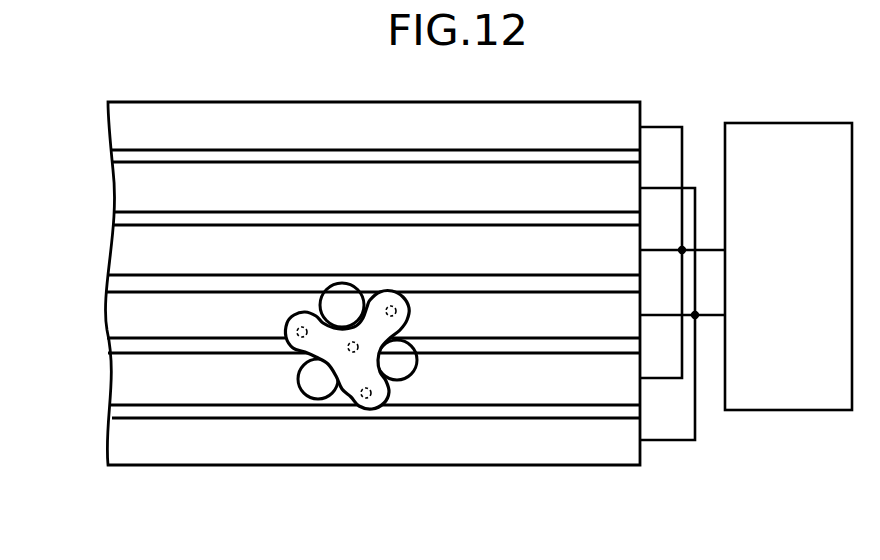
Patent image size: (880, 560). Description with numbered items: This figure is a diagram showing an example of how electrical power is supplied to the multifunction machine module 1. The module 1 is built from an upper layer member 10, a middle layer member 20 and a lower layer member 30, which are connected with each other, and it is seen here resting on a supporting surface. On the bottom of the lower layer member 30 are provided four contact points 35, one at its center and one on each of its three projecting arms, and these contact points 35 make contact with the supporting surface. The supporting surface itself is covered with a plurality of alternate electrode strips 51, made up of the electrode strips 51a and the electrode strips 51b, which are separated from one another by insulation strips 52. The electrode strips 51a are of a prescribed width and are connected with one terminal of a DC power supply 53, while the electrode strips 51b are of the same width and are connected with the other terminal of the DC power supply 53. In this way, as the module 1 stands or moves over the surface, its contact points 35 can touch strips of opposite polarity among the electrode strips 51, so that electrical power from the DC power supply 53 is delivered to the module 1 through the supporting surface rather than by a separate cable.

The multifunction machine module 1 is at (395, 394).
The upper layer member 10 is at (348, 394).
The middle layer member 20 is at (314, 398).
The lower layer member 30 is at (348, 394).
The contact points 35 is at (359, 342).
The electrode strips 51 is at (334, 329).
The electrode strips 51a is at (165, 332).
The electrode strips 51b is at (116, 126).
The insulation strips 52 is at (114, 347).
The DC power supply 53 is at (791, 411).